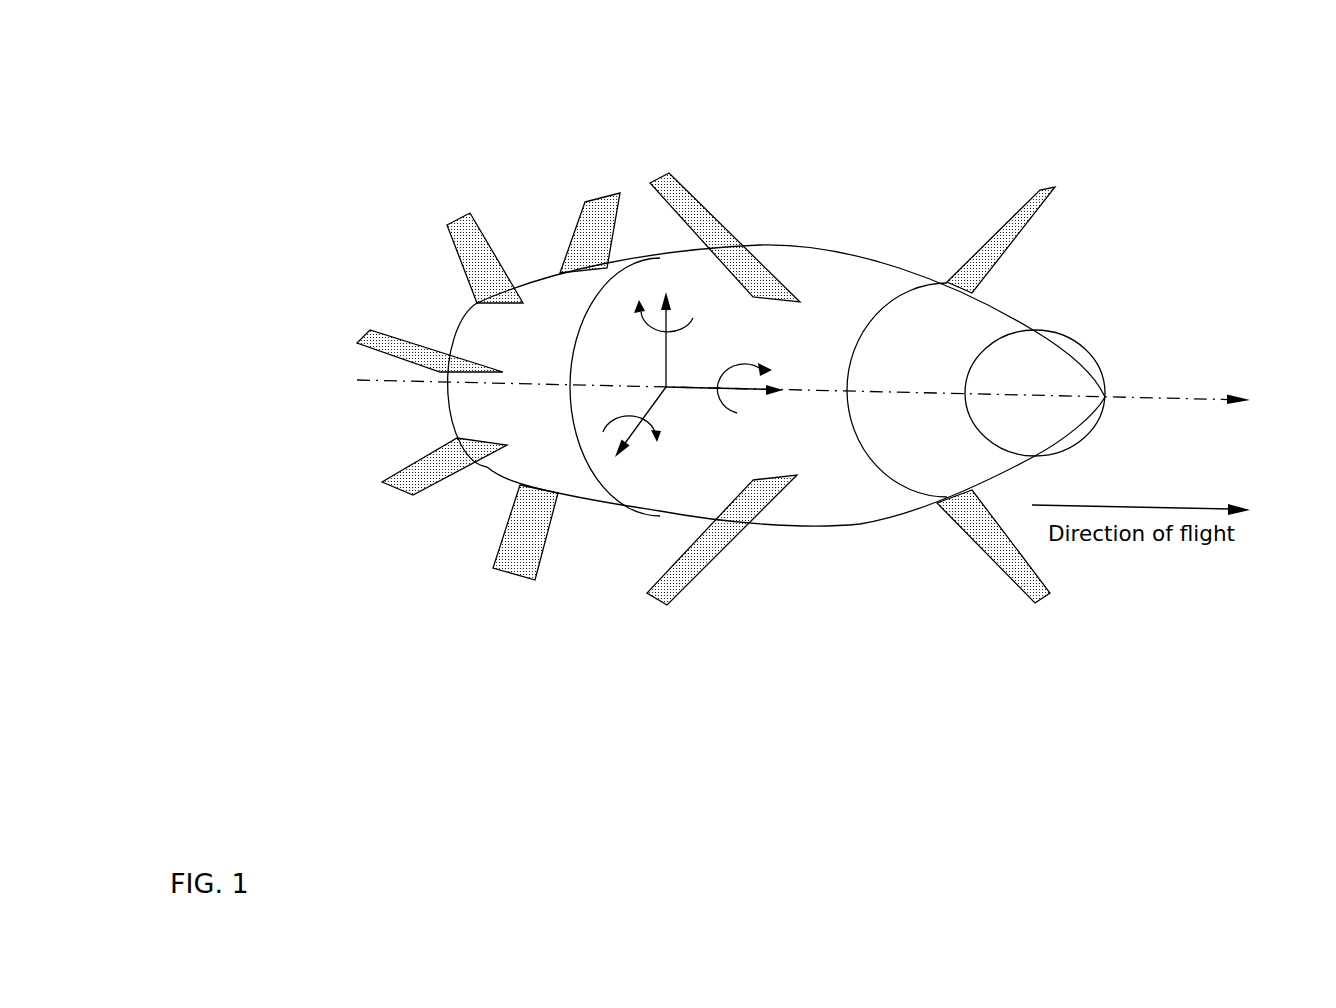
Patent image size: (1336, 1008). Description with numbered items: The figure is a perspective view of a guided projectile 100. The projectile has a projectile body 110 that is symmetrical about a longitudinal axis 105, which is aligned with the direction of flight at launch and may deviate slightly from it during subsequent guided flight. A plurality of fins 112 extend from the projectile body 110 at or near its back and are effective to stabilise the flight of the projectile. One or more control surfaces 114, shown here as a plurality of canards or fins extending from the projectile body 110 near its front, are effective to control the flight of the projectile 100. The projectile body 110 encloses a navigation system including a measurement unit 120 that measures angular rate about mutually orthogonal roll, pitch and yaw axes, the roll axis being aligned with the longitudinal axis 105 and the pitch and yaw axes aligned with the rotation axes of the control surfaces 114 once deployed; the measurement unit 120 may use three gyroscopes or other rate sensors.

The guided projectile 100 is at (340, 82).
The longitudinal axis 105 is at (1150, 397).
The projectile body 110 is at (543, 273).
The fins 112 is at (603, 197).
The control surfaces 114 is at (698, 195).
The measurement unit 120 is at (690, 388).